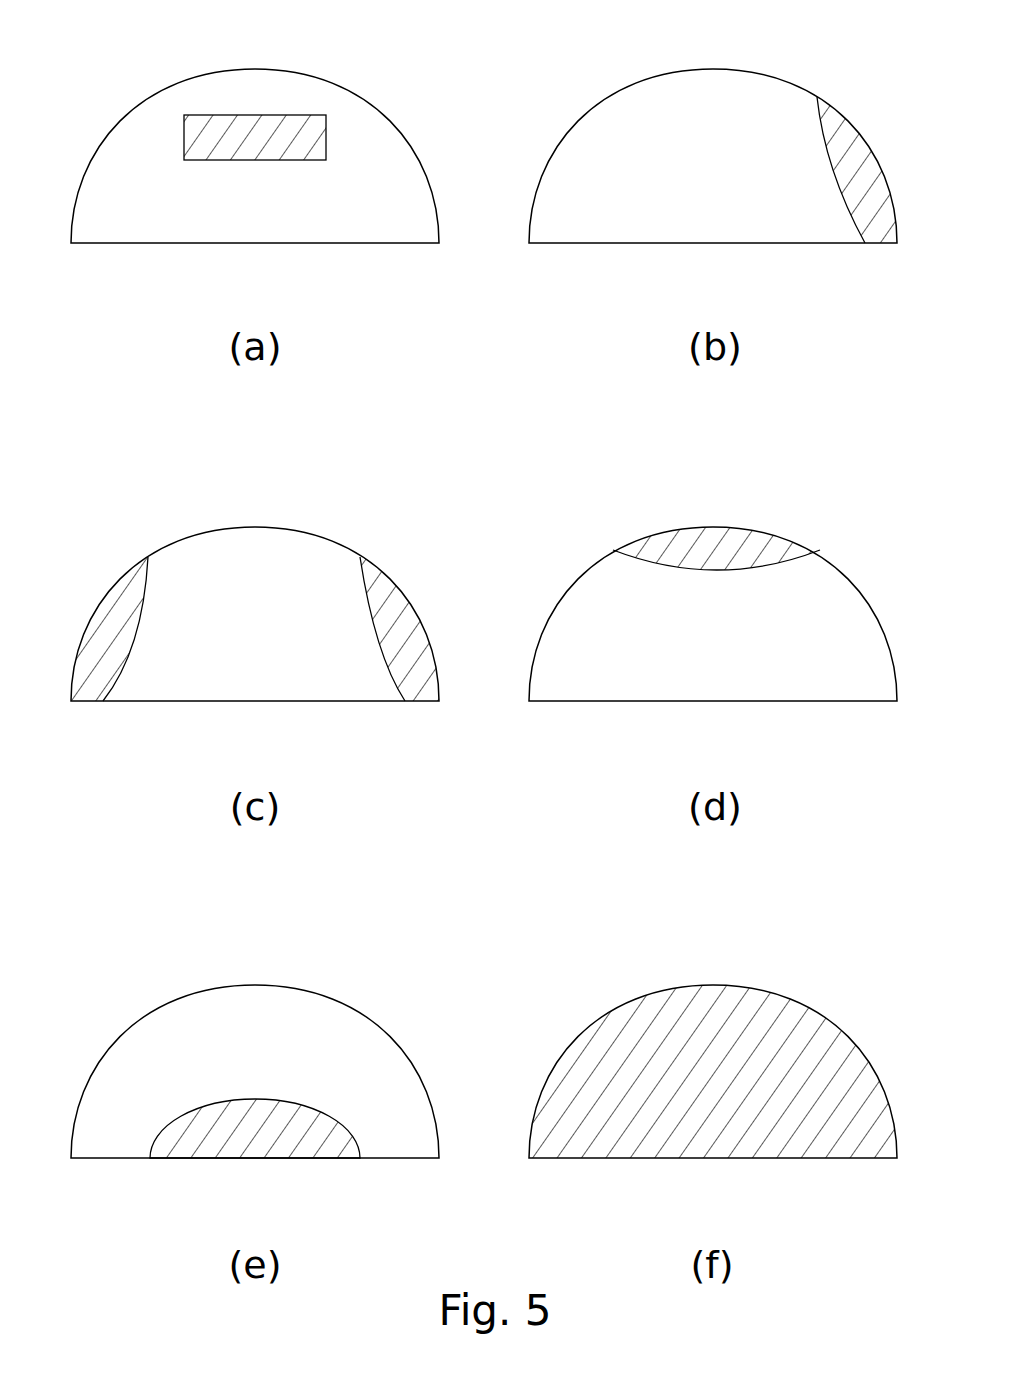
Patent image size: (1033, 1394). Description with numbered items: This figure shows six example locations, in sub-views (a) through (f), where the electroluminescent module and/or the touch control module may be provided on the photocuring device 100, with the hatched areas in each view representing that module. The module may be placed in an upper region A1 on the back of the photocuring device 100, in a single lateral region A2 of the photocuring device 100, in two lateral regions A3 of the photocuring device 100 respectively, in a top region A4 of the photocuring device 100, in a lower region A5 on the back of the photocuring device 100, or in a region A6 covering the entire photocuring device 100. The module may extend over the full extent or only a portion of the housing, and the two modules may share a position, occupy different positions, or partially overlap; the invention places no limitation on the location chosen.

The photocuring device 100 is at (260, 70).
The upper region A1 is at (315, 140).
The lateral region A2 is at (833, 118).
The lateral regions A3 is at (130, 582).
The top region A4 is at (768, 540).
The lower region A5 is at (287, 1147).
The region covering the entire photocuring device A6 is at (835, 1037).